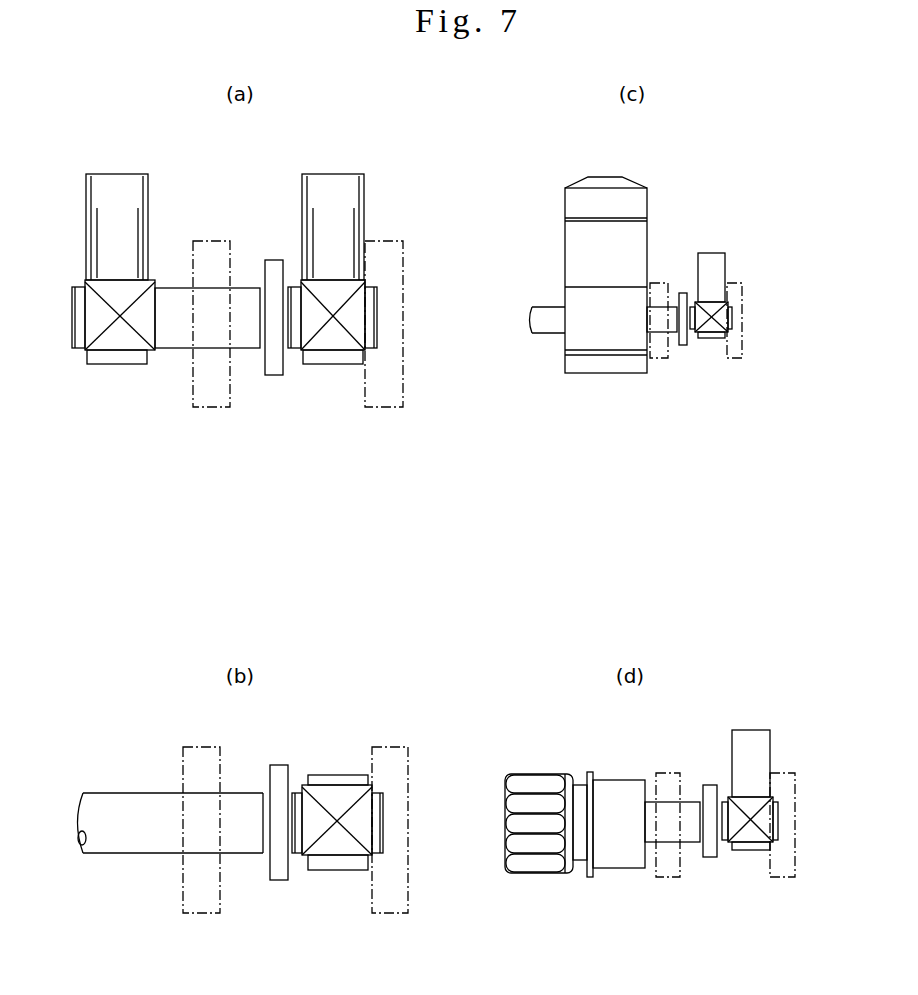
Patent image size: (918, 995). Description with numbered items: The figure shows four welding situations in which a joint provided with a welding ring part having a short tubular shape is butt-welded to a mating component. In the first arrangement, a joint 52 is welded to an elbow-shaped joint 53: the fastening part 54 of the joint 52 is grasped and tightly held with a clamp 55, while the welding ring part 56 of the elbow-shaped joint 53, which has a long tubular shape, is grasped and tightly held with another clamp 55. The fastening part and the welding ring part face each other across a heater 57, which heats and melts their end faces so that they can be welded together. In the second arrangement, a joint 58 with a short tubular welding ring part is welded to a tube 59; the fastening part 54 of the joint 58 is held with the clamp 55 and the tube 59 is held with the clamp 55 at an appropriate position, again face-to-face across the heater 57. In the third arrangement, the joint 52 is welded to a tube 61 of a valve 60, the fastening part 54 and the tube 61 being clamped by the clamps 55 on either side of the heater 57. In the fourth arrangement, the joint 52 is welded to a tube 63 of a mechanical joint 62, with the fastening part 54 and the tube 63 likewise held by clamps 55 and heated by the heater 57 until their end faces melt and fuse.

The joint 52 is at (335, 163).
The elbow-shaped joint 53 is at (110, 163).
The fastening part 54 is at (372, 318).
The clamp 55 is at (213, 387).
The welding ring part 56 is at (173, 303).
The heater 57 is at (273, 363).
The joint 58 is at (335, 757).
The tube 59 is at (135, 802).
The valve 60 is at (562, 162).
The tube 61 is at (672, 300).
The mechanical joint 62 is at (557, 762).
The tube 63 is at (692, 800).